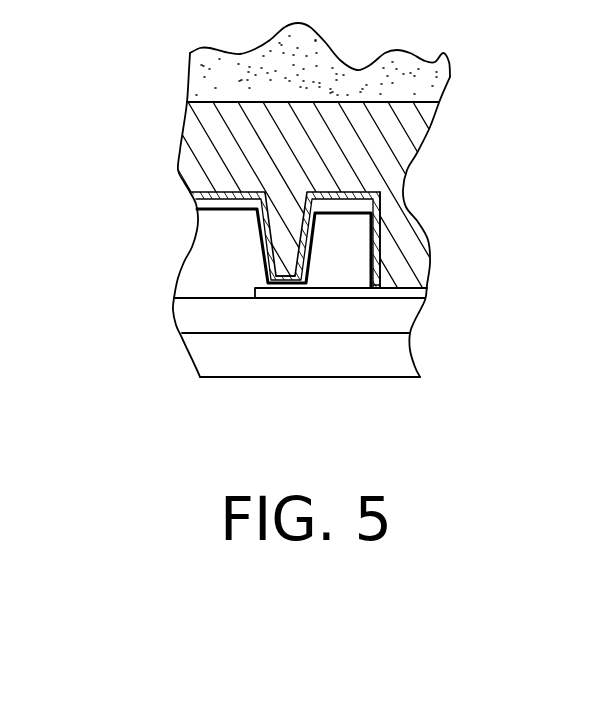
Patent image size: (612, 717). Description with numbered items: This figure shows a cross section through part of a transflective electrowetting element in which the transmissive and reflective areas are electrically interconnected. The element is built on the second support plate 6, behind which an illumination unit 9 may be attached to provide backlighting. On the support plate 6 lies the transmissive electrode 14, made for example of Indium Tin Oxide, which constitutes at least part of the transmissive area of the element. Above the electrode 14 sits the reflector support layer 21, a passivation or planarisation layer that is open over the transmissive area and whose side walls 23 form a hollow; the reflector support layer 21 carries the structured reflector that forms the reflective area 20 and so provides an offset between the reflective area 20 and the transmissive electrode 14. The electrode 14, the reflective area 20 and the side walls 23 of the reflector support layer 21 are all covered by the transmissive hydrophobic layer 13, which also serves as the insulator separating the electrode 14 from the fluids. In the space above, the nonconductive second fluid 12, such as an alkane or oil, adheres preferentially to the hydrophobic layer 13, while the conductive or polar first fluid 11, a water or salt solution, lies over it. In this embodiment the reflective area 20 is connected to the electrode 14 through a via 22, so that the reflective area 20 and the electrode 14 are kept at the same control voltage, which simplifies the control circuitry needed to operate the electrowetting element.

The second support plate 6 is at (365, 315).
The illumination unit 9 is at (310, 353).
The first fluid 11 is at (303, 83).
The second fluid 12 is at (341, 120).
The hydrophobic layer 13 is at (352, 193).
The electrode 14 is at (308, 290).
The reflective area 20 is at (190, 200).
The reflector support layer 21 is at (215, 240).
The via 22 is at (290, 284).
The side walls 23 is at (380, 250).